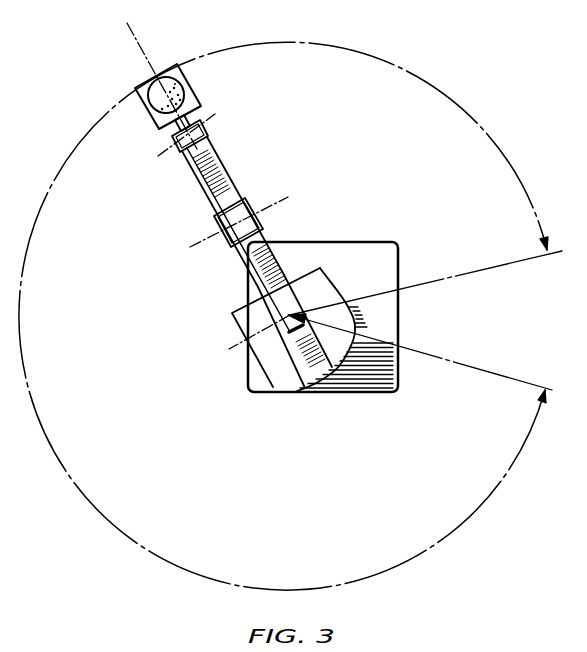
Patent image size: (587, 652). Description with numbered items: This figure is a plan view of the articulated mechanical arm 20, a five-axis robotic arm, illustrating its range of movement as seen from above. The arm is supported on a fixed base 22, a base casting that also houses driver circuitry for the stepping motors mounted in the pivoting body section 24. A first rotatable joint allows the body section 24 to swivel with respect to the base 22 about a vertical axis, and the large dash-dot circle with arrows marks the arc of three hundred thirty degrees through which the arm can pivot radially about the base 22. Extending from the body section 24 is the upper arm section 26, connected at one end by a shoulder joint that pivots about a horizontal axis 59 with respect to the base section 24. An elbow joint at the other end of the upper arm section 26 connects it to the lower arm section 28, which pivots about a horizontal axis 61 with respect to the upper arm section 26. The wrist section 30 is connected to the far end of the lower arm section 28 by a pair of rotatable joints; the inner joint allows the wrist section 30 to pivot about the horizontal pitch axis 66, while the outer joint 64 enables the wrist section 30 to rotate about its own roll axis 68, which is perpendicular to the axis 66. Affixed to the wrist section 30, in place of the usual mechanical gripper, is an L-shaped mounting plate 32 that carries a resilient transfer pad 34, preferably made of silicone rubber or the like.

The articulated mechanical arm 20 is at (342, 220).
The base 22 is at (386, 385).
The body section 24 is at (237, 311).
The upper arm section 26 is at (242, 264).
The lower arm section 28 is at (208, 203).
The wrist section 30 is at (170, 144).
The mounting plate 32 is at (192, 93).
The transfer pad 34 is at (150, 110).
The horizontal axis 59 is at (331, 276).
The horizontal axis 61 is at (268, 199).
The outer joint 64 is at (212, 114).
The horizontal axis 66 is at (228, 124).
The axis 68 is at (141, 46).